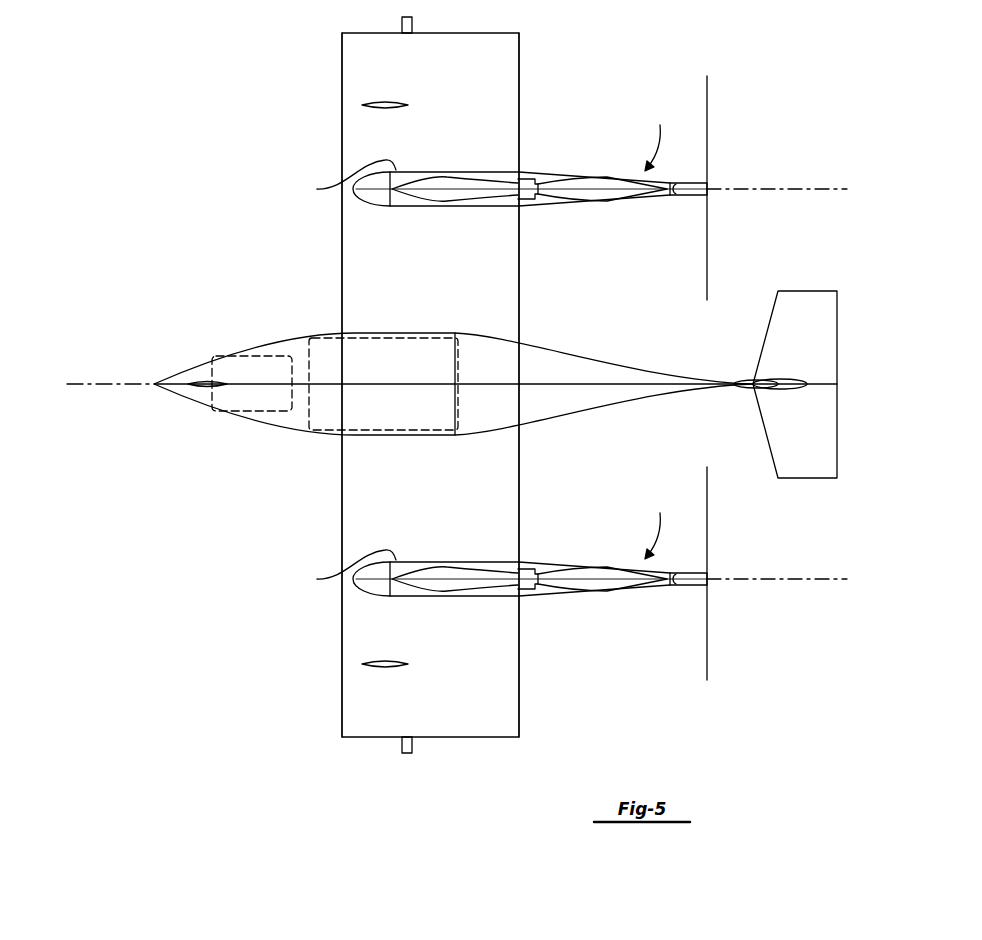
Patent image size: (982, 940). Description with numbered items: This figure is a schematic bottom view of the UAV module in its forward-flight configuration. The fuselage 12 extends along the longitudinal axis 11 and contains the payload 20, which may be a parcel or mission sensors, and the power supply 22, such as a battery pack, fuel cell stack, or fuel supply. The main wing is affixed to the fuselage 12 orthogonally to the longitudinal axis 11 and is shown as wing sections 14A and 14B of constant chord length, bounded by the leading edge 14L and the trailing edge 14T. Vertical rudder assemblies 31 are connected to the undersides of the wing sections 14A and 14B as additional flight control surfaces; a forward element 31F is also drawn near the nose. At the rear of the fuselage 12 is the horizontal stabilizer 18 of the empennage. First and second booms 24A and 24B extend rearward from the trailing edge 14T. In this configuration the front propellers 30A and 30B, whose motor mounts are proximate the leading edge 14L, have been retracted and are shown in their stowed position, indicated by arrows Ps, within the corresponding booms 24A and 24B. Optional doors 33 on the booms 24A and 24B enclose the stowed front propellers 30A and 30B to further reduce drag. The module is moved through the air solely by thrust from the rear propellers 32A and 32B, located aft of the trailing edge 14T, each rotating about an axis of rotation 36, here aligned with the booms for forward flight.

The longitudinal axis 11 is at (110, 386).
The fuselage 12 is at (603, 357).
The wing section 14A is at (497, 717).
The wing section 14B is at (497, 77).
The leading edge 14L is at (342, 262).
The trailing edge 14T is at (519, 302).
The horizontal stabilizer 18 is at (805, 292).
The payload 20 is at (252, 383).
The power supply 22 is at (383, 384).
The first boom 24A is at (583, 562).
The second boom 24B is at (585, 210).
The front propeller 30A is at (603, 586).
The front propeller 30B is at (603, 182).
The vertical rudder assembly 31 is at (385, 100).
The forward propeller 31F is at (203, 388).
The rear propeller 32A is at (707, 678).
The rear propeller 32B is at (707, 97).
The door 33 is at (345, 374).
The axis of rotation 36 is at (803, 189).
The stowed position arrows Ps is at (657, 330).